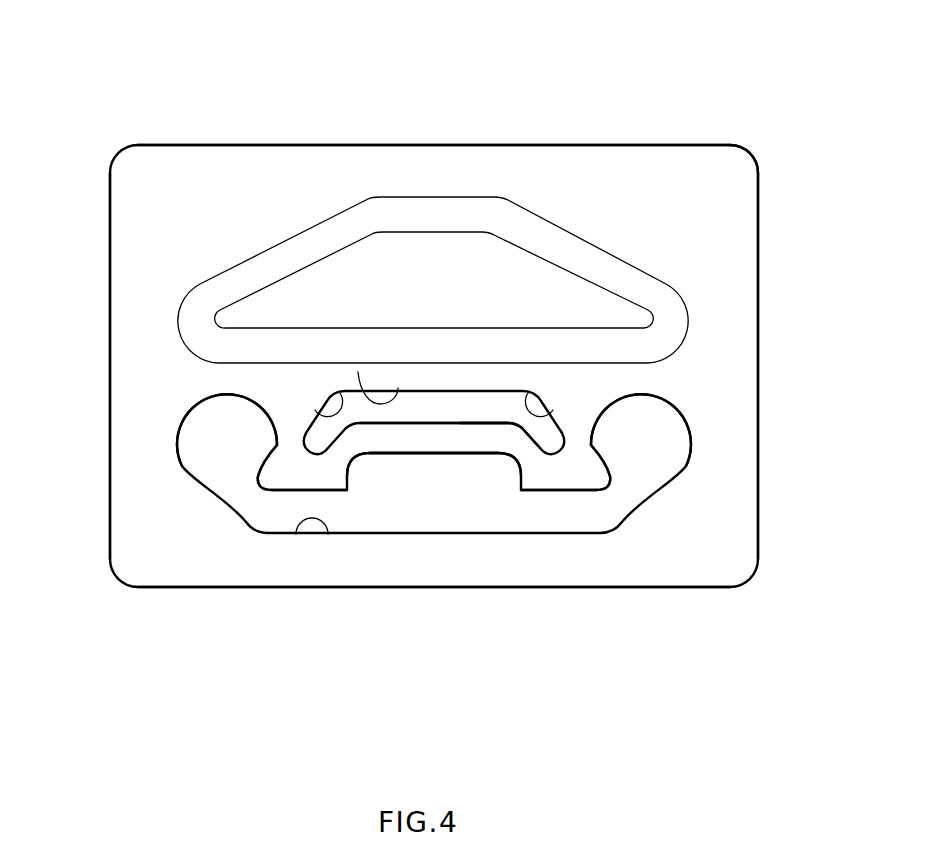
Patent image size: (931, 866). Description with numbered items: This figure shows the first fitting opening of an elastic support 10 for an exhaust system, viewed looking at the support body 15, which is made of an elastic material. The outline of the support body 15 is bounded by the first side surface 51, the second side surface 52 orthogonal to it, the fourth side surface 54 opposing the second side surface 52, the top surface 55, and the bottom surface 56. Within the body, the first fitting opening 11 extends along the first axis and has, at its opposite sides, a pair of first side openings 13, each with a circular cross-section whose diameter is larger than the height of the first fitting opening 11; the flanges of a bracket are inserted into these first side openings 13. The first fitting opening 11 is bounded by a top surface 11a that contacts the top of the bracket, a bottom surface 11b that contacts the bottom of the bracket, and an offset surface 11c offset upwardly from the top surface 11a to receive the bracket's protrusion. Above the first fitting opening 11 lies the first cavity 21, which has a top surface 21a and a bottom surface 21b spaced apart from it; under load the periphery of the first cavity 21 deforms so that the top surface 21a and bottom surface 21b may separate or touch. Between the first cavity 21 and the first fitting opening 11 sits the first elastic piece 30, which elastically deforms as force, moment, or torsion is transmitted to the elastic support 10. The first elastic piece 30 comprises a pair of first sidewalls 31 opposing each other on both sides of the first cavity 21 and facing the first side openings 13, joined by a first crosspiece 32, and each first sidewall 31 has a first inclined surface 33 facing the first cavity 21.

The elastic support 10 is at (137, 49).
The first fitting opening 11 is at (452, 497).
The top surface 11a is at (283, 493).
The bottom surface 11b is at (297, 537).
The offset surface 11c is at (418, 453).
The first side openings 13 is at (211, 429).
The support body 15 is at (774, 250).
The first cavity 21 is at (448, 402).
The top surface 21a is at (358, 372).
The bottom surface 21b is at (489, 423).
The first elastic piece 30 is at (372, 462).
The first sidewalls 31 is at (300, 427).
The first crosspiece 32 is at (492, 437).
The first inclined surface 33 is at (340, 393).
The first side surface 51 is at (748, 198).
The second side surface 52 is at (109, 211).
The fourth side surface 54 is at (757, 304).
The top surface 55 is at (233, 145).
The bottom surface 56 is at (170, 587).